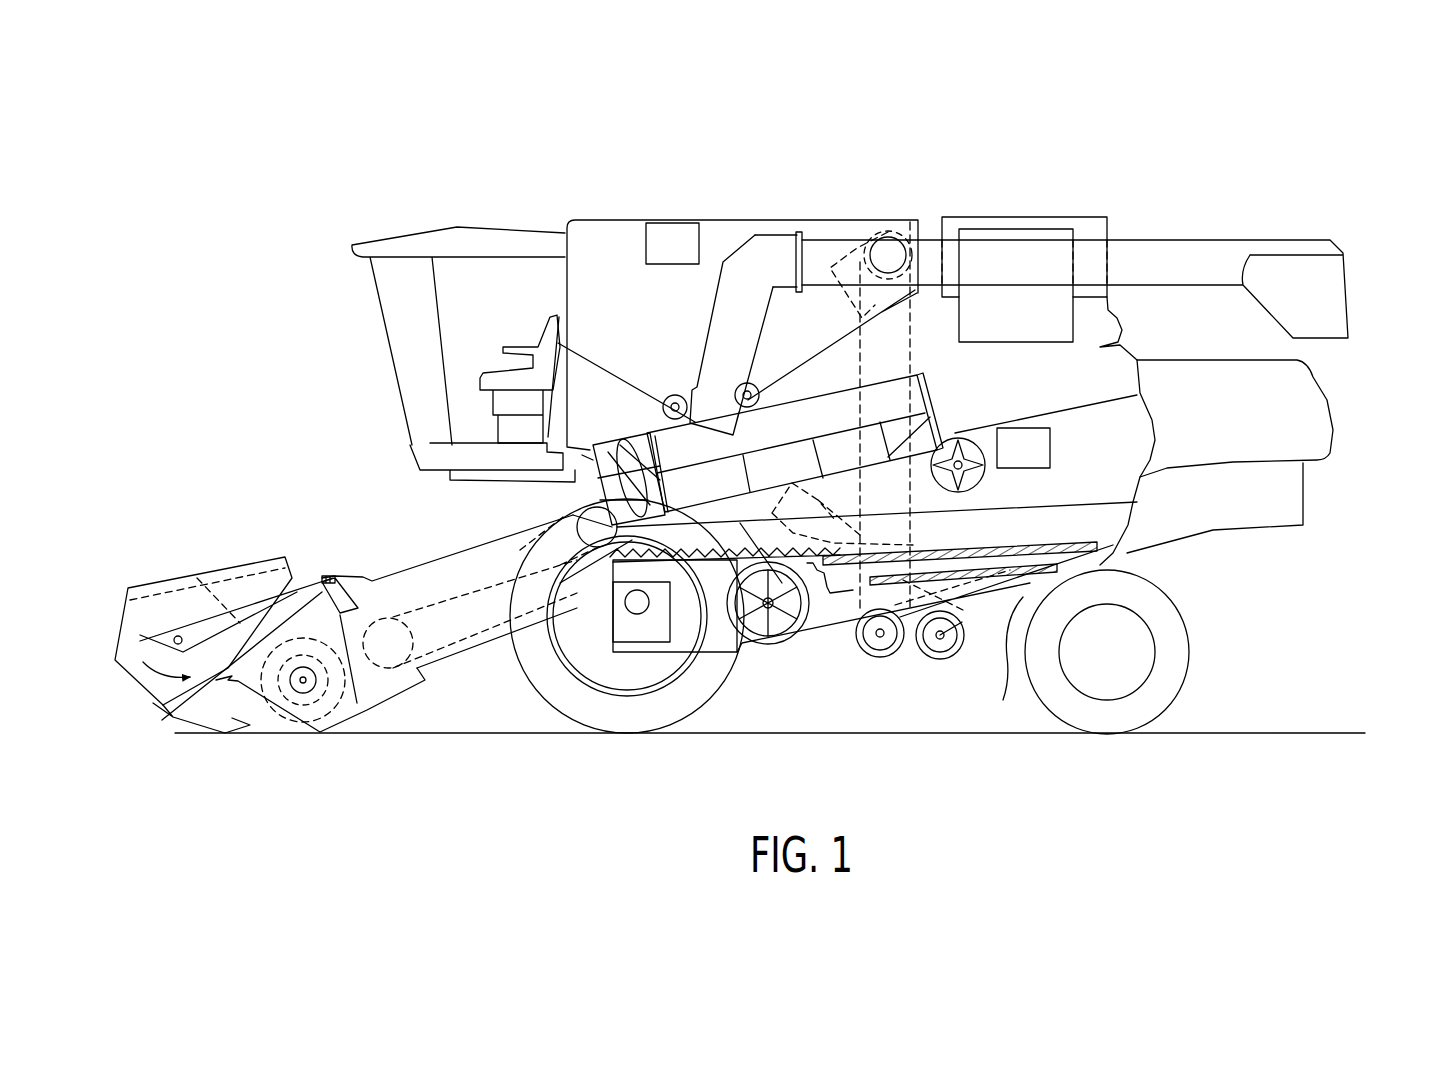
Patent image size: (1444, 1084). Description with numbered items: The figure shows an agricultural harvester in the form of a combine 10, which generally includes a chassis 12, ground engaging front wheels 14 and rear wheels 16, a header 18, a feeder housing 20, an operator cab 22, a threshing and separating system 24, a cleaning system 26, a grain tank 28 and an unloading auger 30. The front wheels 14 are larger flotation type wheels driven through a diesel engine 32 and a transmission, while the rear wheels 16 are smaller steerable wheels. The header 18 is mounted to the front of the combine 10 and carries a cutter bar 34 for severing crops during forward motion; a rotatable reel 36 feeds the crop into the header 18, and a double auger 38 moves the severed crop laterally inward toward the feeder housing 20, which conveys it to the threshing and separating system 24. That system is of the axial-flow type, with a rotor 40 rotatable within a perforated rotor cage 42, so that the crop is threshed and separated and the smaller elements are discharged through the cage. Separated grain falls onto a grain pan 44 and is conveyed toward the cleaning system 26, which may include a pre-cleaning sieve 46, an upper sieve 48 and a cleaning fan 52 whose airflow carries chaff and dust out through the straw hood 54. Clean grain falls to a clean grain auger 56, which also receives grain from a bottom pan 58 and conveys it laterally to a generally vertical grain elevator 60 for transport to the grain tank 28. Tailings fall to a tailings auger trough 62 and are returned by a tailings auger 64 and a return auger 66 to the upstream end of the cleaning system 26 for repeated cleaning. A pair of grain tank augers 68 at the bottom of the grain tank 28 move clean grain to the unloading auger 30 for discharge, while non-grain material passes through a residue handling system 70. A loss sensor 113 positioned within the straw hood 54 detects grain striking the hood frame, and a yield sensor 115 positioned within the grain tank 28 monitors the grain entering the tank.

The combine 10 is at (437, 213).
The chassis 12 is at (1130, 555).
The front wheels 14 is at (555, 692).
The rear wheels 16 is at (1180, 665).
The header 18 is at (212, 557).
The feeder housing 20 is at (420, 557).
The operator cab 22 is at (385, 328).
The threshing and separating system 24 is at (528, 495).
The cleaning system 26 is at (838, 650).
The grain tank 28 is at (614, 228).
The unloading auger 30 is at (1202, 255).
The diesel engine 32 is at (1002, 229).
The cutter bar 34 is at (192, 722).
The rotatable reel 36 is at (118, 633).
The double auger 38 is at (300, 700).
The rotor 40 is at (622, 455).
The rotor cage 42 is at (815, 408).
The grain pan 44 is at (625, 572).
The pre-cleaning sieve 46 is at (918, 552).
The upper sieve 48 is at (1018, 555).
The cleaning fan 52 is at (772, 626).
The straw hood 54 is at (1307, 395).
The clean grain auger 56 is at (882, 658).
The bottom pan 58 is at (1010, 657).
The grain elevator 60 is at (912, 340).
The tailings auger trough 62 is at (990, 598).
The tailings auger 64 is at (940, 660).
The return auger 66 is at (850, 528).
The grain tank augers 68 is at (670, 395).
The residue handling system 70 is at (1262, 540).
The loss sensor 113 is at (1056, 447).
The yield sensor 115 is at (705, 240).